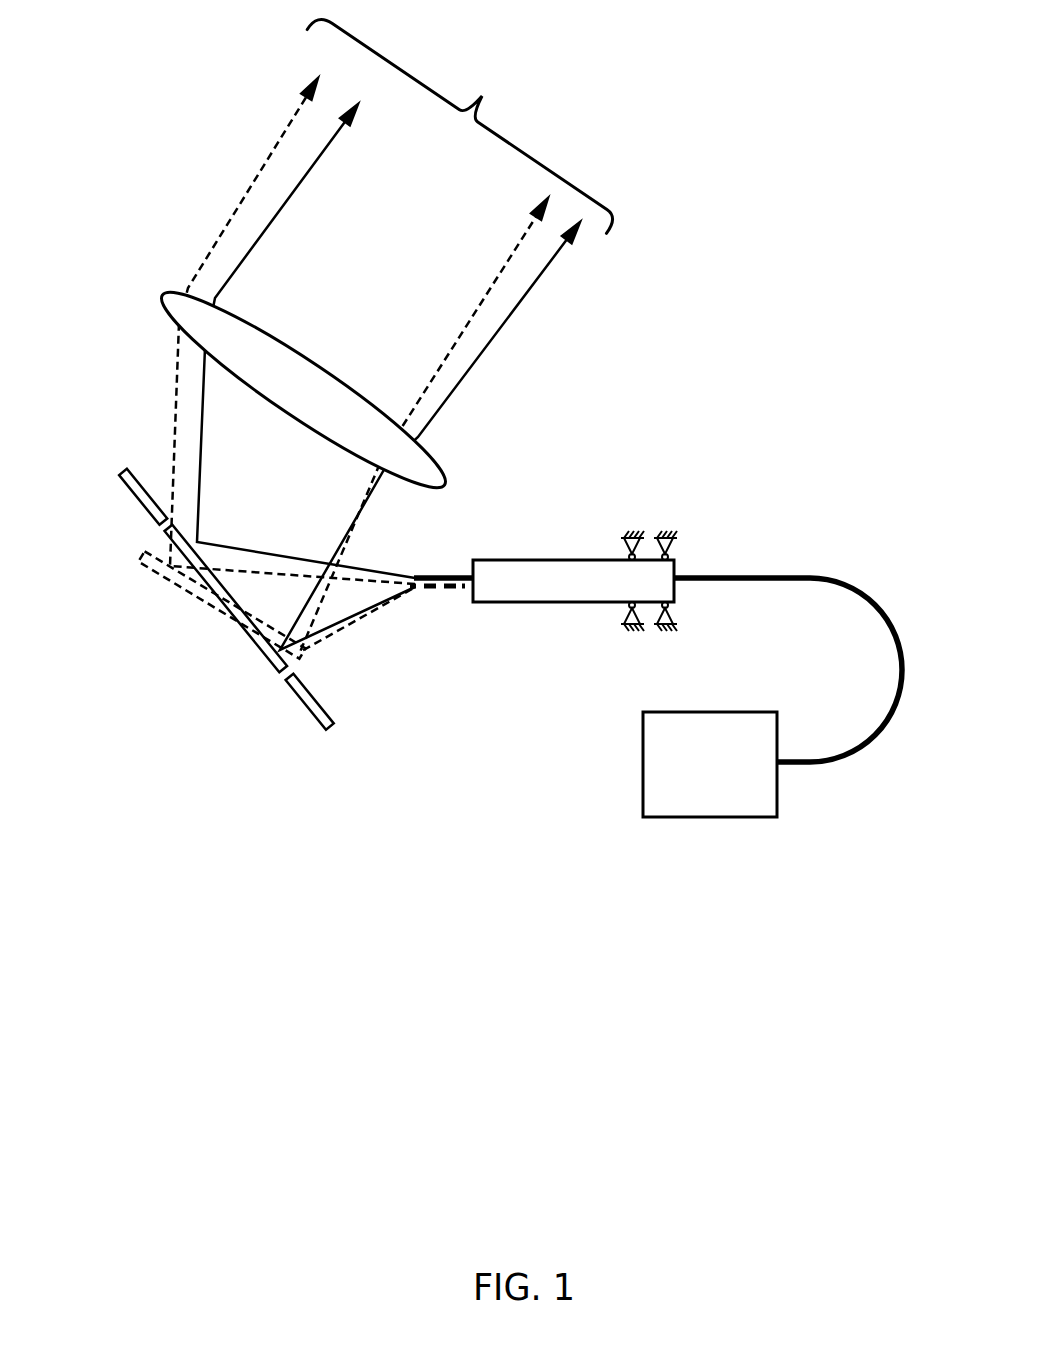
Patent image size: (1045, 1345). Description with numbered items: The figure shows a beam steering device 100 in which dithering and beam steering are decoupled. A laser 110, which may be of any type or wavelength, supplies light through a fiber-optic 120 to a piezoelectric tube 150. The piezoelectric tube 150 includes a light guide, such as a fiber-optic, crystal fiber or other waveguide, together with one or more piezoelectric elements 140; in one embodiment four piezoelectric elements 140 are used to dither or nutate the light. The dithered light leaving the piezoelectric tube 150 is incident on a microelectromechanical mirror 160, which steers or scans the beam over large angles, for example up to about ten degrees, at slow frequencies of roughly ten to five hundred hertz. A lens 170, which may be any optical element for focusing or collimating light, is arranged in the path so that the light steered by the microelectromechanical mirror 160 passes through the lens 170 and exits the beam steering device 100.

The beam steering device 100 is at (508, 476).
The laser 110 is at (716, 797).
The fiber-optic 120 is at (818, 580).
The piezoelectric elements 140 is at (623, 542).
The piezoelectric tube 150 is at (495, 593).
The microelectromechanical mirror 160 is at (313, 718).
The lens 170 is at (172, 291).